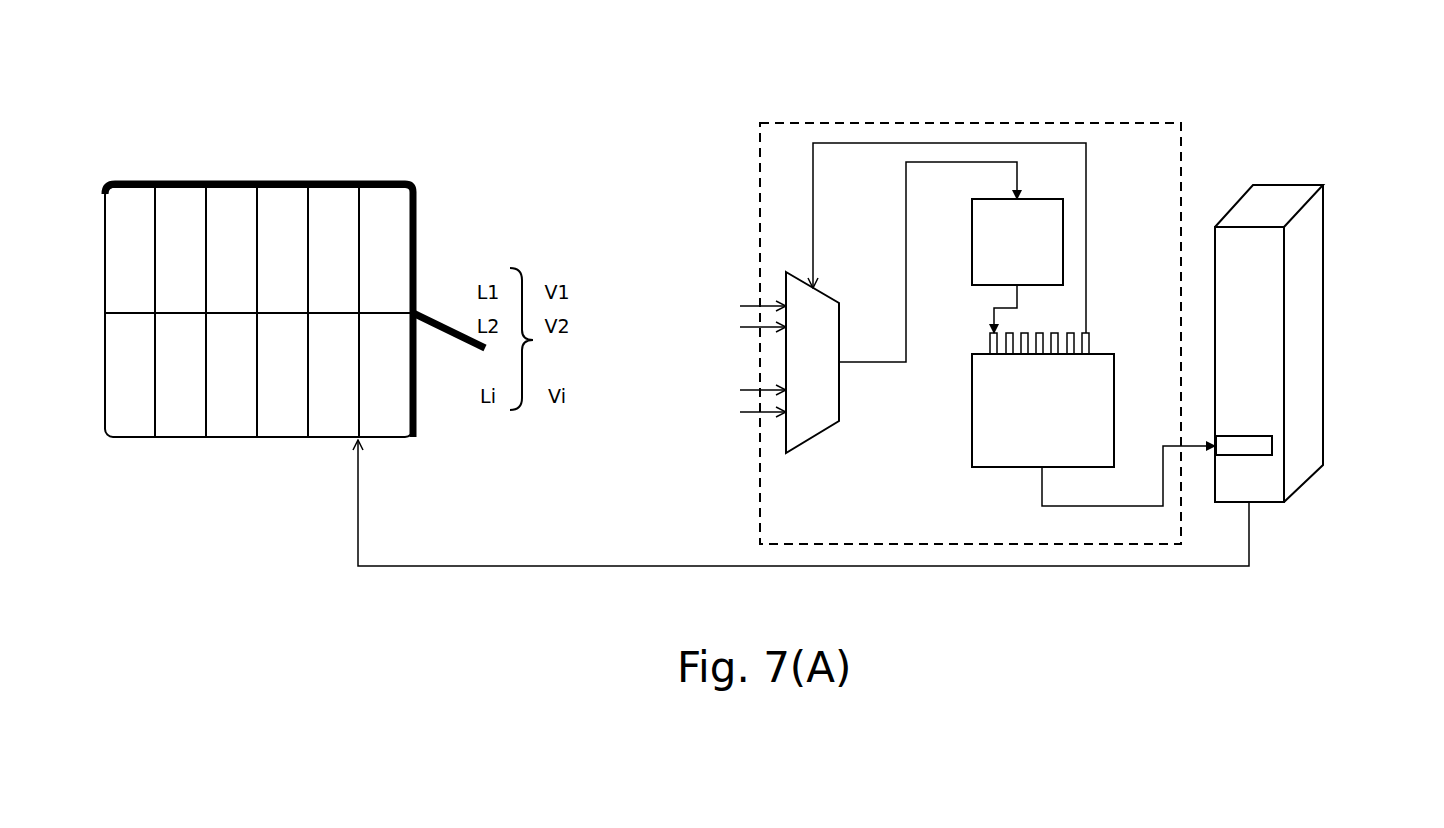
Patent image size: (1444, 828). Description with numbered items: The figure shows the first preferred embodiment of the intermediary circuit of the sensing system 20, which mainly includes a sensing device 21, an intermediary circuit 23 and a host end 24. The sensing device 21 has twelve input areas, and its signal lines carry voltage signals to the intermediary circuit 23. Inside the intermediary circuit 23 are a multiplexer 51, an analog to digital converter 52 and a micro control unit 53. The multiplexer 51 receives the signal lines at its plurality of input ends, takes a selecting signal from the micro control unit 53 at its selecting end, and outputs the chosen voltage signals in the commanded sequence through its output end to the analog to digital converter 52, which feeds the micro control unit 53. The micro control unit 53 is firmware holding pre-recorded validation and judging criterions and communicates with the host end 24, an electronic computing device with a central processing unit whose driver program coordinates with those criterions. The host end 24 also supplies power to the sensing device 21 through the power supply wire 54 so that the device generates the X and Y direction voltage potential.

The sensing system 20 is at (244, 527).
The sensing device 21 is at (257, 180).
The intermediary circuit 23 is at (970, 123).
The host end 24 is at (1325, 325).
The multiplexer 51 is at (885, 298).
The analogy to digital converter (ADC) 52 is at (1017, 266).
The micro control unit (MCU) 53 is at (1093, 419).
The power supply wire 54 is at (713, 565).